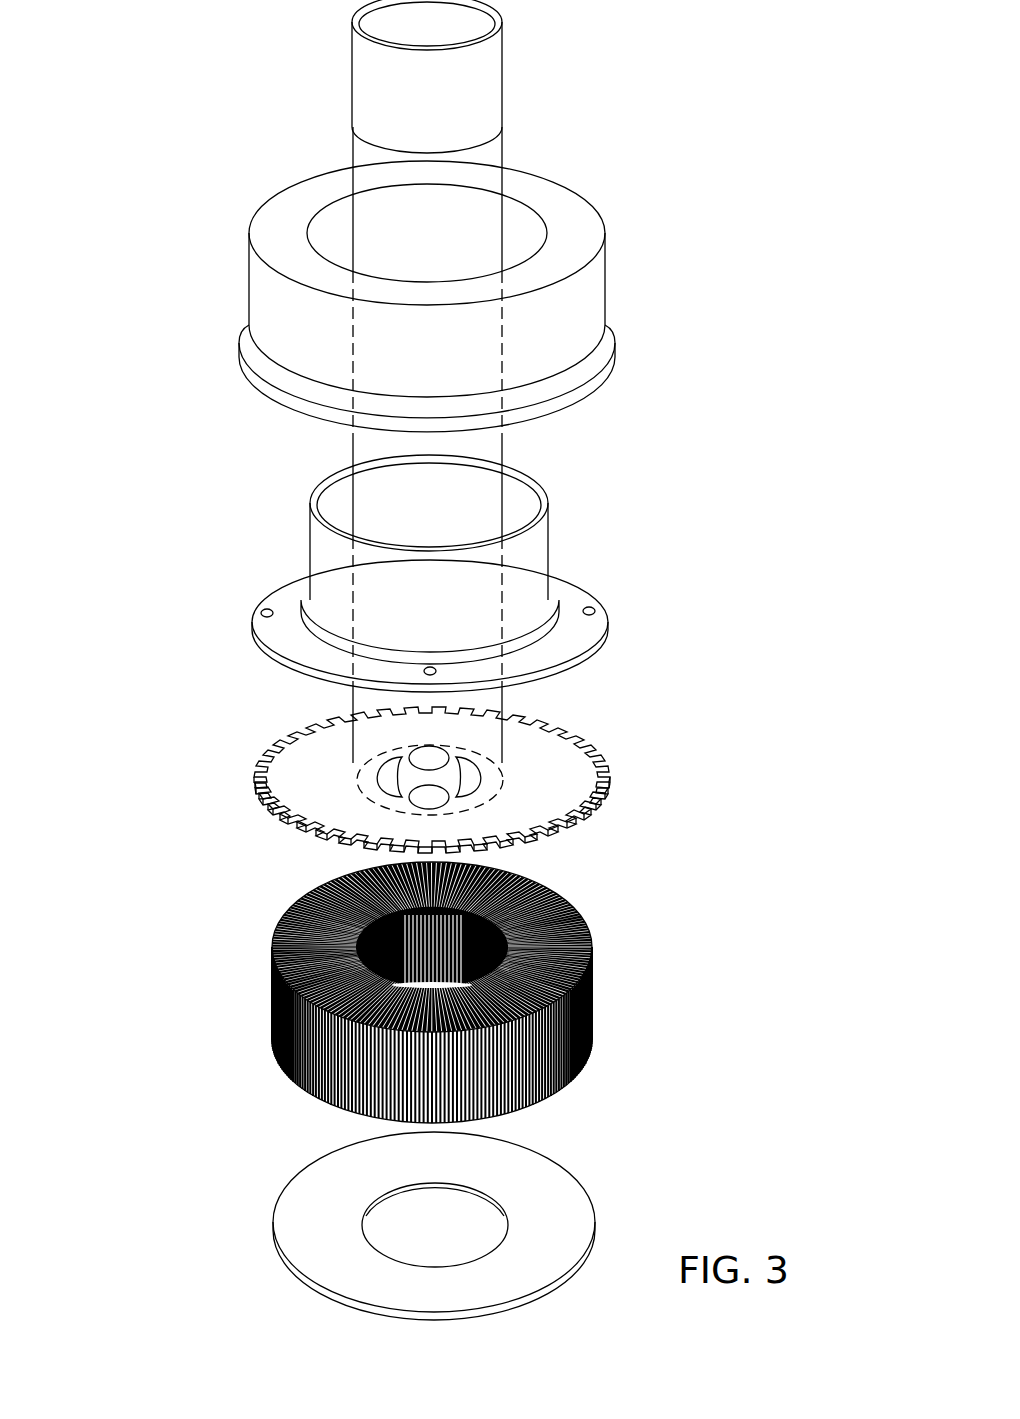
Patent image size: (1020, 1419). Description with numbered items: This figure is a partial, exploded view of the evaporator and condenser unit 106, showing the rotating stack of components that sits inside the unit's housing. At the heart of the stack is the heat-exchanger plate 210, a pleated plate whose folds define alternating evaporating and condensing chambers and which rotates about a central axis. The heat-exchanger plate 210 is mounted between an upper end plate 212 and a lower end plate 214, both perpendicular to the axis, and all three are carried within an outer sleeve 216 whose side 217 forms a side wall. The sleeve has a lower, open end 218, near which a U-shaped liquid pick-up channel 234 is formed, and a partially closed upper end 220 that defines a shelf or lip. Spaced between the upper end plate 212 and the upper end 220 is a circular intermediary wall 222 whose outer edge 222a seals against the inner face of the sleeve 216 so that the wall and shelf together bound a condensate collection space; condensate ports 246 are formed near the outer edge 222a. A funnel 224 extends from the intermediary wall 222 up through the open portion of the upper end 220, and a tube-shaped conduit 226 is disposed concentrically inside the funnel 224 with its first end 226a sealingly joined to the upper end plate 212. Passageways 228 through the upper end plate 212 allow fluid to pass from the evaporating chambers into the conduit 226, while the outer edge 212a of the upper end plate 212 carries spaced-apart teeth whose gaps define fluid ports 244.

The evaporator and condenser unit 106 is at (161, 75).
The heat-exchanger plate 210 is at (595, 985).
The upper end plate 212 is at (543, 747).
The outer edge of the upper end plate 212a is at (611, 772).
The lower end plate 214 is at (594, 1211).
The outer sleeve 216 is at (592, 200).
The side of the outer sleeve 217 is at (606, 290).
The lower open end of the sleeve 218 is at (264, 407).
The upper end of the sleeve 220 is at (264, 229).
The intermediary wall 222 is at (578, 591).
The outer edge of the intermediary wall 222a is at (272, 660).
The funnel 224 is at (549, 530).
The tube-shaped conduit 226 is at (503, 57).
The first end of the conduit 226a is at (499, 122).
The passageways 228 is at (430, 748).
The liquid pick-up channel 234 is at (611, 382).
The fluid ports 244 is at (315, 832).
The condensate ports 246 is at (259, 622).